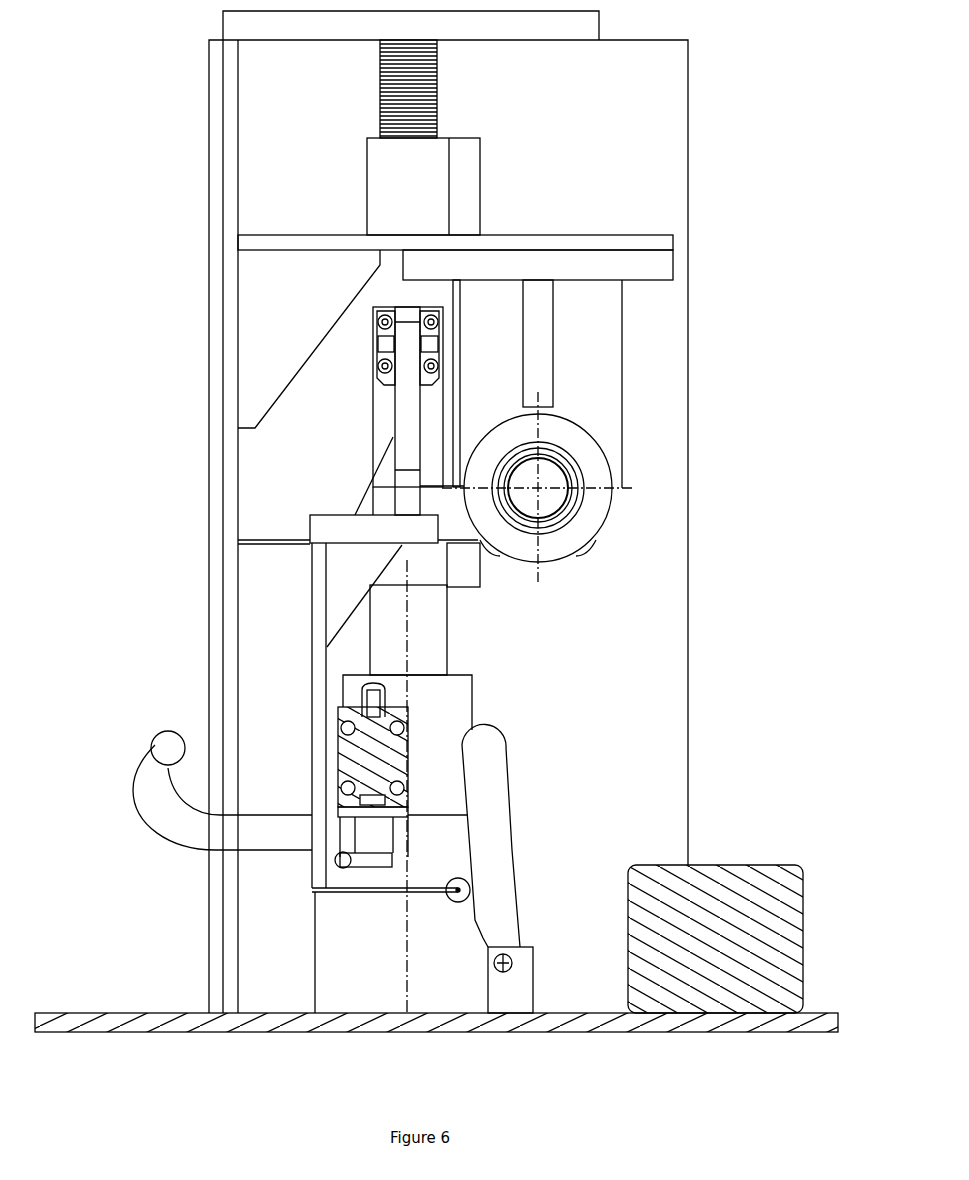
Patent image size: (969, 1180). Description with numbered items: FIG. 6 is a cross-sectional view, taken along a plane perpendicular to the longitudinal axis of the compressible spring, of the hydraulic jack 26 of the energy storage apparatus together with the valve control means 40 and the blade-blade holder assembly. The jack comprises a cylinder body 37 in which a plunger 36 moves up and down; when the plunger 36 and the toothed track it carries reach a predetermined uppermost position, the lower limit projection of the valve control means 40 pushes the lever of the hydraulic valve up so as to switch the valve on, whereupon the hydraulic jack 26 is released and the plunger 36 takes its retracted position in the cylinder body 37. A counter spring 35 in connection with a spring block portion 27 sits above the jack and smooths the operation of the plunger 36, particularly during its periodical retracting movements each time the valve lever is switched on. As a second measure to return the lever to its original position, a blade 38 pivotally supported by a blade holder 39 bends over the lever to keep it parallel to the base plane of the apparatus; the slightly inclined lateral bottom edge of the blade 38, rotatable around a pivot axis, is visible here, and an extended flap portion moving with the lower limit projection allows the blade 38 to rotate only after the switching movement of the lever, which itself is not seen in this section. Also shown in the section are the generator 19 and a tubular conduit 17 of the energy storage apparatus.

The tubular conduit 17 is at (153, 787).
The generator 19 is at (602, 473).
The hydraulic jack 26 is at (760, 201).
The spring block portion 27 is at (420, 160).
The counter spring 35 is at (437, 107).
The plunger 36 is at (420, 664).
The cylinder body 37 is at (418, 745).
The blade 38 is at (480, 816).
The blade holder 39 is at (513, 993).
The valve control means 40 is at (306, 733).